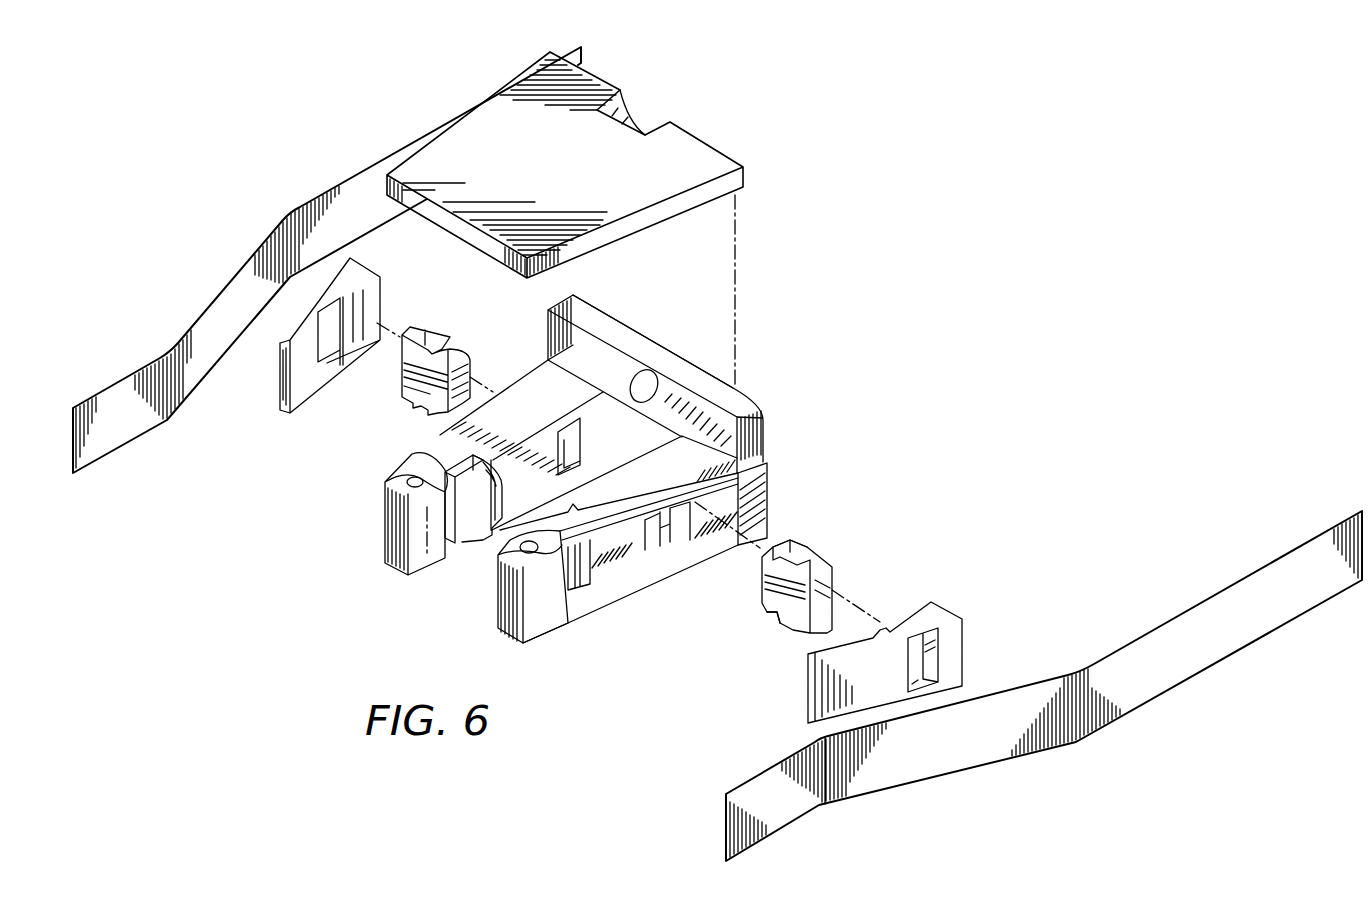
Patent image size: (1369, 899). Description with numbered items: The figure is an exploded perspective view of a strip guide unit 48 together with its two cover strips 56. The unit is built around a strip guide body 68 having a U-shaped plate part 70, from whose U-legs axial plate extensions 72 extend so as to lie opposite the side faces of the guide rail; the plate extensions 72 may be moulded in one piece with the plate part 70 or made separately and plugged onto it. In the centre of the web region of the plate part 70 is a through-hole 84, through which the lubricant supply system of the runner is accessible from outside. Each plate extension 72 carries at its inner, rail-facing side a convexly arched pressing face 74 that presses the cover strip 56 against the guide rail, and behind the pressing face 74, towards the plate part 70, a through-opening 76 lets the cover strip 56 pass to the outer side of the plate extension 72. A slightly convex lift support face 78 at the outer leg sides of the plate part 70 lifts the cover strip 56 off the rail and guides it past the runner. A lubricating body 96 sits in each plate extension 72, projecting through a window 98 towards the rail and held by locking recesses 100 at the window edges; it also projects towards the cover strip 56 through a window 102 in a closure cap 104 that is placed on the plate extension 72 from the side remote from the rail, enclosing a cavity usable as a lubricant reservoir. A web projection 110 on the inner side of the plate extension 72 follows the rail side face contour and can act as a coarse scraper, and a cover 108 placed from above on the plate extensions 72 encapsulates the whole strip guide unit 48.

The strip guide unit 48 is at (663, 277).
The cover strip 56 is at (112, 438).
The strip guide body 68 is at (655, 370).
The plate part 70 is at (603, 328).
The plate extension 72 is at (636, 489).
The pressing face 74 is at (533, 532).
The through-opening 76 is at (452, 466).
The lift support face 78 is at (758, 480).
The through-hole 84 is at (643, 380).
The lubricating body 96 is at (437, 330).
The window 98 is at (573, 442).
The locking recess 100 is at (783, 547).
The window 102 is at (923, 660).
The closure cap 104 is at (617, 490).
The cover 108 is at (697, 152).
The web projection 110 is at (477, 505).